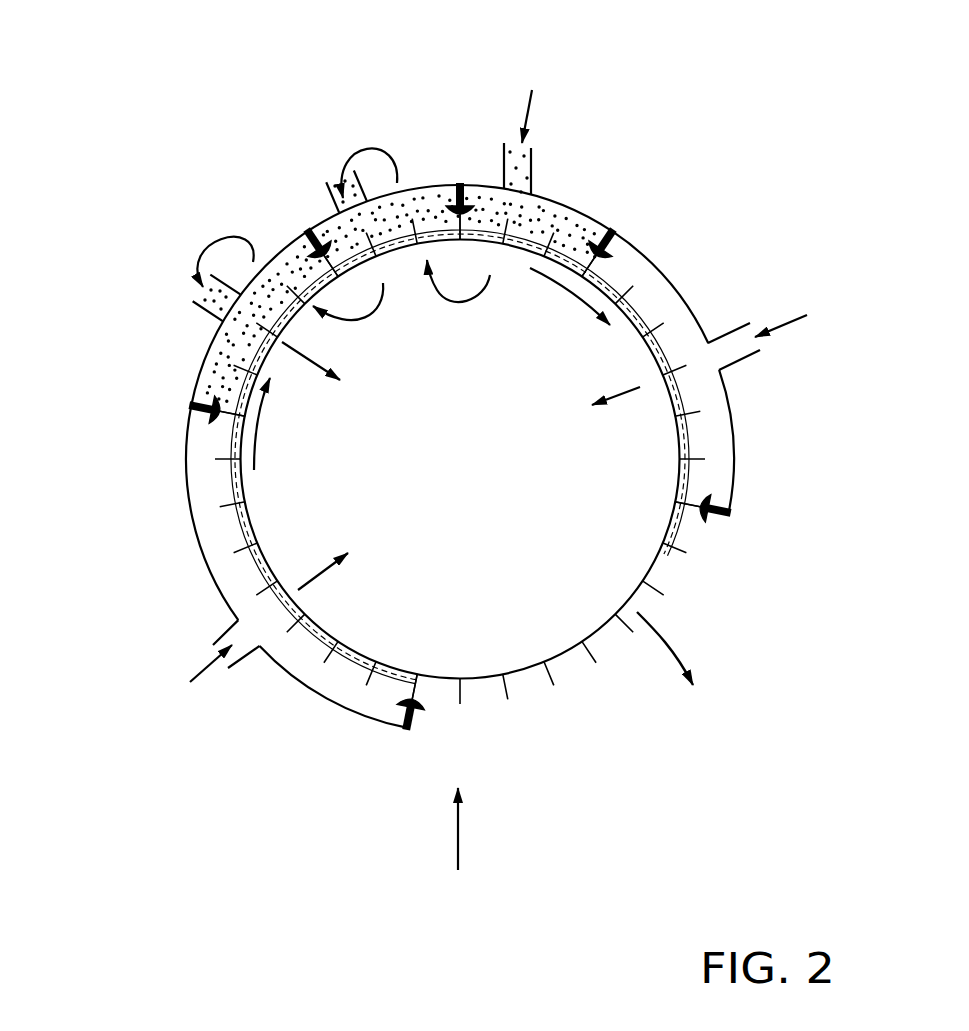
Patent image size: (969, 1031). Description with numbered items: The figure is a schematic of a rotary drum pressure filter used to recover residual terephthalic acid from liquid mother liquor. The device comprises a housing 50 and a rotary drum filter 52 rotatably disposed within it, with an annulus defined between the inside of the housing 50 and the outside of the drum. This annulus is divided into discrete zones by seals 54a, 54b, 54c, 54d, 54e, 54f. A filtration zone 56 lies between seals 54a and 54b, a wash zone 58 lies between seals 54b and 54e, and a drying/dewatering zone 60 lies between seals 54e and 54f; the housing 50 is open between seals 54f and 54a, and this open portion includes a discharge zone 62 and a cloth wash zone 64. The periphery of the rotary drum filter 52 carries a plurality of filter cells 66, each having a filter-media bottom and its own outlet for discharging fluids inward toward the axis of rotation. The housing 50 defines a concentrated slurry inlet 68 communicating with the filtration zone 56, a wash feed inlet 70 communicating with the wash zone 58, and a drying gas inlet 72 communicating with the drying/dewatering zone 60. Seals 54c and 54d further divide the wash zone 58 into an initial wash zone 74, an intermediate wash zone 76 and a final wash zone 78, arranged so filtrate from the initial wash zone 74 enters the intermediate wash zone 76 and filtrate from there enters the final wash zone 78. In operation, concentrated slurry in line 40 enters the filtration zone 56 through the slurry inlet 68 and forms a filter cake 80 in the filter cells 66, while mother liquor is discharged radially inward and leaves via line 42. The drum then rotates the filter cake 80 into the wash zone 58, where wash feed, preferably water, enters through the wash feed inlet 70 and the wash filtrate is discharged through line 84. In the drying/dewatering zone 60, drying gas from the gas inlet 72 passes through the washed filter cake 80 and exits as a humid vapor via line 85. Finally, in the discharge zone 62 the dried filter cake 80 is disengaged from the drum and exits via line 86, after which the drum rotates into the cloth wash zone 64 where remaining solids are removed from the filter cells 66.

The line 40 is at (187, 677).
The line 42 is at (300, 588).
The housing 50 is at (185, 487).
The rotary drum filter 52 is at (242, 482).
The seal 54a is at (407, 730).
The seal 54b is at (197, 398).
The seal 54c is at (310, 225).
The seal 54d is at (457, 186).
The seal 54e is at (610, 225).
The seal 54f is at (727, 513).
The filtration zone 56 is at (222, 537).
The wash zone 58 is at (280, 258).
The drying/dewatering zone 60 is at (658, 315).
The discharge zone 62 is at (722, 652).
The cloth wash zone 64 is at (458, 870).
The filter cells 66 is at (345, 662).
The concentrated slurry inlet 68 is at (217, 637).
The wash feed inlet 70 is at (532, 175).
The drying gas inlet 72 is at (737, 362).
The initial wash zone 74 is at (535, 213).
The intermediate wash zone 76 is at (410, 190).
The final wash zone 78 is at (208, 336).
The filter cake 80 is at (257, 554).
The line 84 is at (302, 350).
The line 85 is at (624, 392).
The line 86 is at (668, 618).